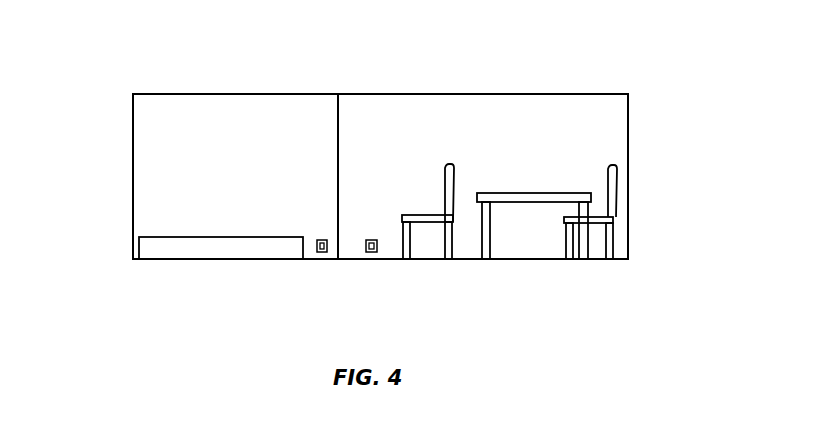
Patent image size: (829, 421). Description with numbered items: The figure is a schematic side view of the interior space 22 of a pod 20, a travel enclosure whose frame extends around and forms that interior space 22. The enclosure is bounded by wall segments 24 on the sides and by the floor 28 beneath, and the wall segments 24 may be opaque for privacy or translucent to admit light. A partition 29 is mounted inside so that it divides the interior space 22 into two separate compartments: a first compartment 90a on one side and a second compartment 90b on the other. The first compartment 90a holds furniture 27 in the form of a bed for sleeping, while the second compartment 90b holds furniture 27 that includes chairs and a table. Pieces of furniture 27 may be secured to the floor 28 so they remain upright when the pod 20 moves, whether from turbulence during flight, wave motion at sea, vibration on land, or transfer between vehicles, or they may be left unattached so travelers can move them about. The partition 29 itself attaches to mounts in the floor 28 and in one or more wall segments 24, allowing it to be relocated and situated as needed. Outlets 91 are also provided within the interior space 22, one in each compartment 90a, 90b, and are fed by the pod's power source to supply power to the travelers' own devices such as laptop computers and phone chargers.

The pod 20 is at (636, 67).
The interior space 22 is at (197, 134).
The wall segments 24 is at (133, 148).
The furniture 27 is at (202, 252).
The floor 28 is at (543, 260).
The partition 29 is at (339, 145).
The first compartment 90a is at (158, 204).
The second compartment 90b is at (587, 148).
The outlets 91 is at (316, 253).